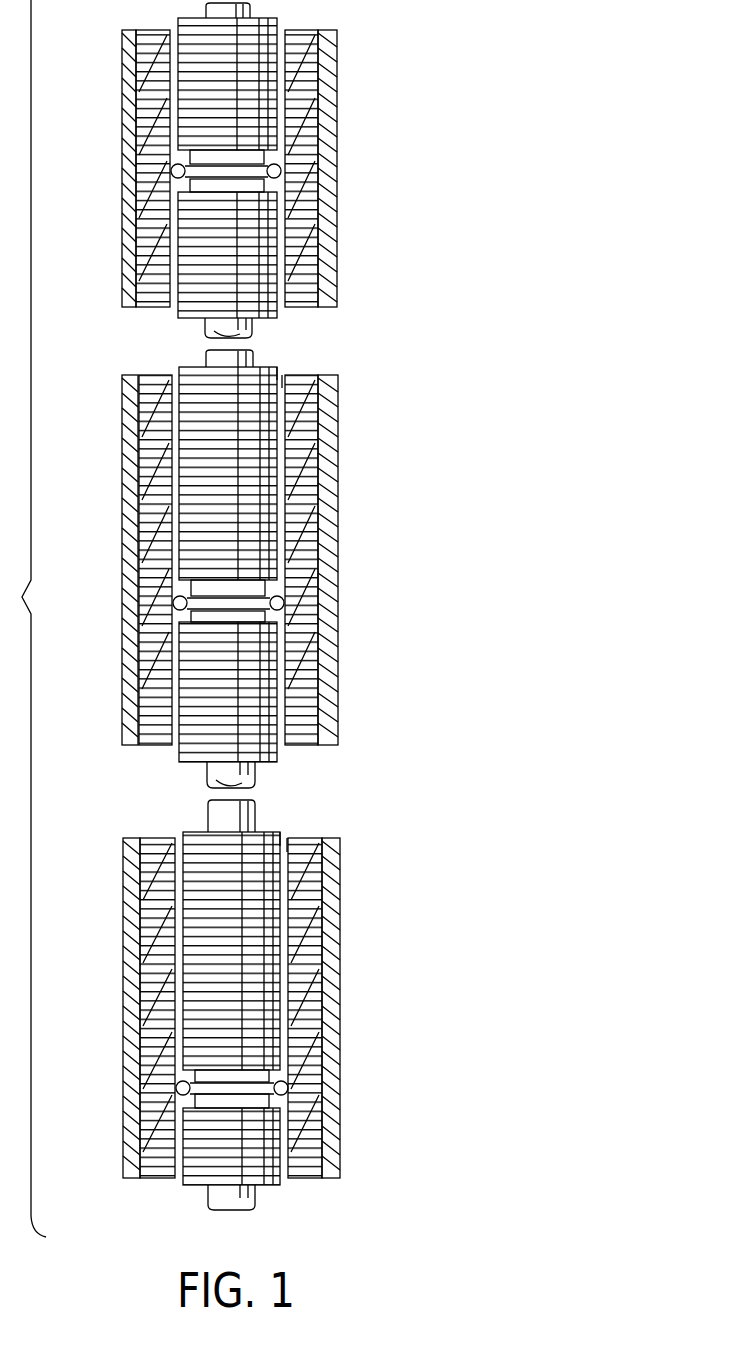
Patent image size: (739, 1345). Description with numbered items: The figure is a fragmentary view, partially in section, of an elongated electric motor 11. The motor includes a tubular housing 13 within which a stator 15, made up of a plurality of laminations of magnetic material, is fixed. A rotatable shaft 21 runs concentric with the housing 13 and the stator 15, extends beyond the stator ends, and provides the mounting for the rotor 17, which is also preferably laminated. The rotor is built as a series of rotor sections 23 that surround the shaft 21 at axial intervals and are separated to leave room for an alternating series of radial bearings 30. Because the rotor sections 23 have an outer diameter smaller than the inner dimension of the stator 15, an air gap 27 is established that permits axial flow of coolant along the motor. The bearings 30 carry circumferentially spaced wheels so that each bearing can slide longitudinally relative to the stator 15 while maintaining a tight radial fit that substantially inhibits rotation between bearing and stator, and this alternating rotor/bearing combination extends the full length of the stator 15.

The elongated electric motor 11 is at (368, 470).
The tubular housing 13 is at (337, 232).
The stator 15 is at (337, 172).
The rotor 17 is at (277, 362).
The rotatable shaft 21 is at (262, 812).
The rotor sections 23 is at (190, 820).
The air gap 27 is at (280, 377).
The radial bearings 30 is at (128, 170).